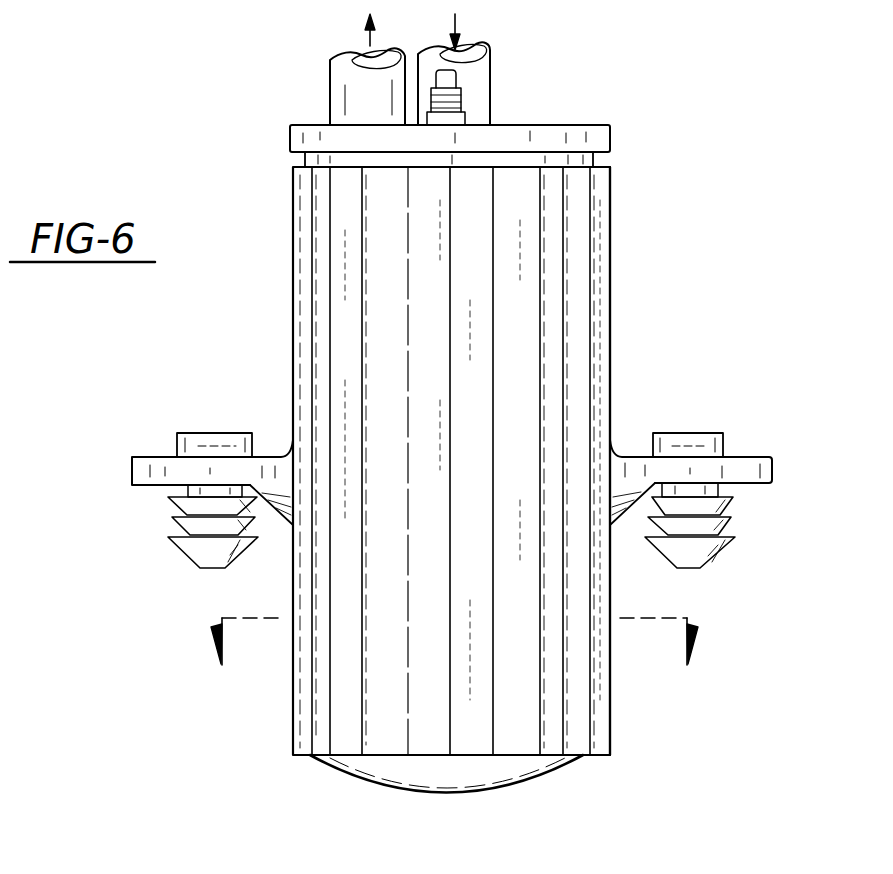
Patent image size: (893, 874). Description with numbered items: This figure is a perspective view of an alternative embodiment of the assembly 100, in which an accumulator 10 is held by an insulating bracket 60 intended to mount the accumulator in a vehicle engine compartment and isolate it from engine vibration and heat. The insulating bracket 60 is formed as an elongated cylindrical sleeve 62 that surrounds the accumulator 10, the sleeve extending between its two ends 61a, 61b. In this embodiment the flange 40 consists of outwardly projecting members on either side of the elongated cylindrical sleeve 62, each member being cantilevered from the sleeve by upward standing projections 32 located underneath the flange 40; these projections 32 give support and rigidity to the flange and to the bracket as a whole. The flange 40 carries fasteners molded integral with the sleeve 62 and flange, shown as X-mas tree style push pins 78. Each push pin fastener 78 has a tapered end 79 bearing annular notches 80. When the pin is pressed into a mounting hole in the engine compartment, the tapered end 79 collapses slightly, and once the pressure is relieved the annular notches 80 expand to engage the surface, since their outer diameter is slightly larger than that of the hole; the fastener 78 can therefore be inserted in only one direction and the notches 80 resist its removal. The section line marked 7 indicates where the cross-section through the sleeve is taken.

The assembly 100 is at (726, 109).
The accumulator 10 is at (570, 125).
The insulating bracket 60 is at (282, 264).
The end of insulating sleeve 61a is at (297, 163).
The end of insulating sleeve 61b is at (310, 757).
The elongated cylindrical sleeve 62 is at (612, 268).
The flange 40 is at (131, 467).
The upward standing projections 32 is at (283, 513).
The push pin fastener 78 is at (190, 433).
The tapered end 79 is at (210, 568).
The annular notches 80 is at (168, 498).
The section line 7- 7 is at (450, 652).